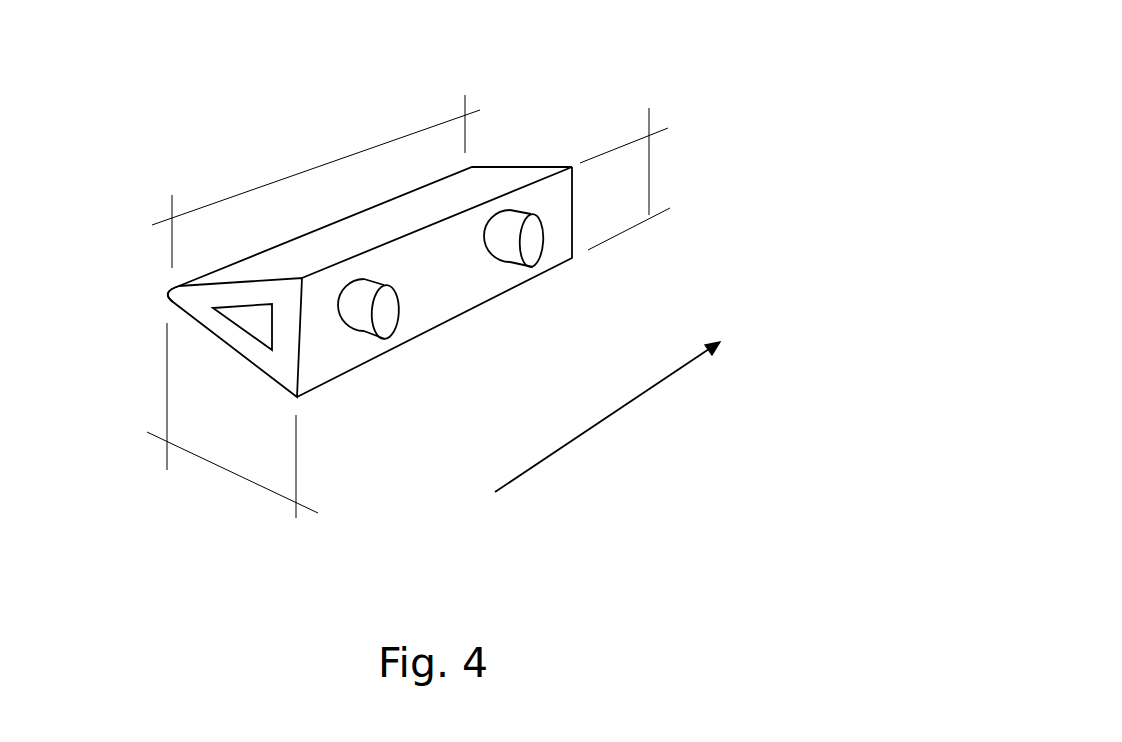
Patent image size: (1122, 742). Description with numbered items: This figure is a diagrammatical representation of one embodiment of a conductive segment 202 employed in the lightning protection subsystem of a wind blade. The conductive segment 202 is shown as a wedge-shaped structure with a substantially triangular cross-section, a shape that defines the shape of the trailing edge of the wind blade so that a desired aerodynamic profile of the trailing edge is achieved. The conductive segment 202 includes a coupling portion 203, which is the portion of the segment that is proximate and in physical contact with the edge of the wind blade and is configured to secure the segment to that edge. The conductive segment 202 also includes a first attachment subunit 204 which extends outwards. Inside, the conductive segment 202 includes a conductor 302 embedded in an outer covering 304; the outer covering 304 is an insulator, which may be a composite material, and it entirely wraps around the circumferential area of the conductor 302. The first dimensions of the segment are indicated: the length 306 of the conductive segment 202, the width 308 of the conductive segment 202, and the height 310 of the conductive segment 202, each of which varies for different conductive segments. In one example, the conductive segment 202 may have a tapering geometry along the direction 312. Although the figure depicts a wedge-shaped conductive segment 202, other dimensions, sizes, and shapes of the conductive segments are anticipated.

The conductive segment 202 is at (783, 97).
The coupling portion 203 is at (555, 243).
The first attachment subunit 204 is at (362, 320).
The conductor 302 is at (215, 309).
The outer covering 304 is at (170, 298).
The length 306 is at (258, 185).
The width 308 is at (220, 467).
The height 310 is at (649, 182).
The direction 312 is at (603, 418).